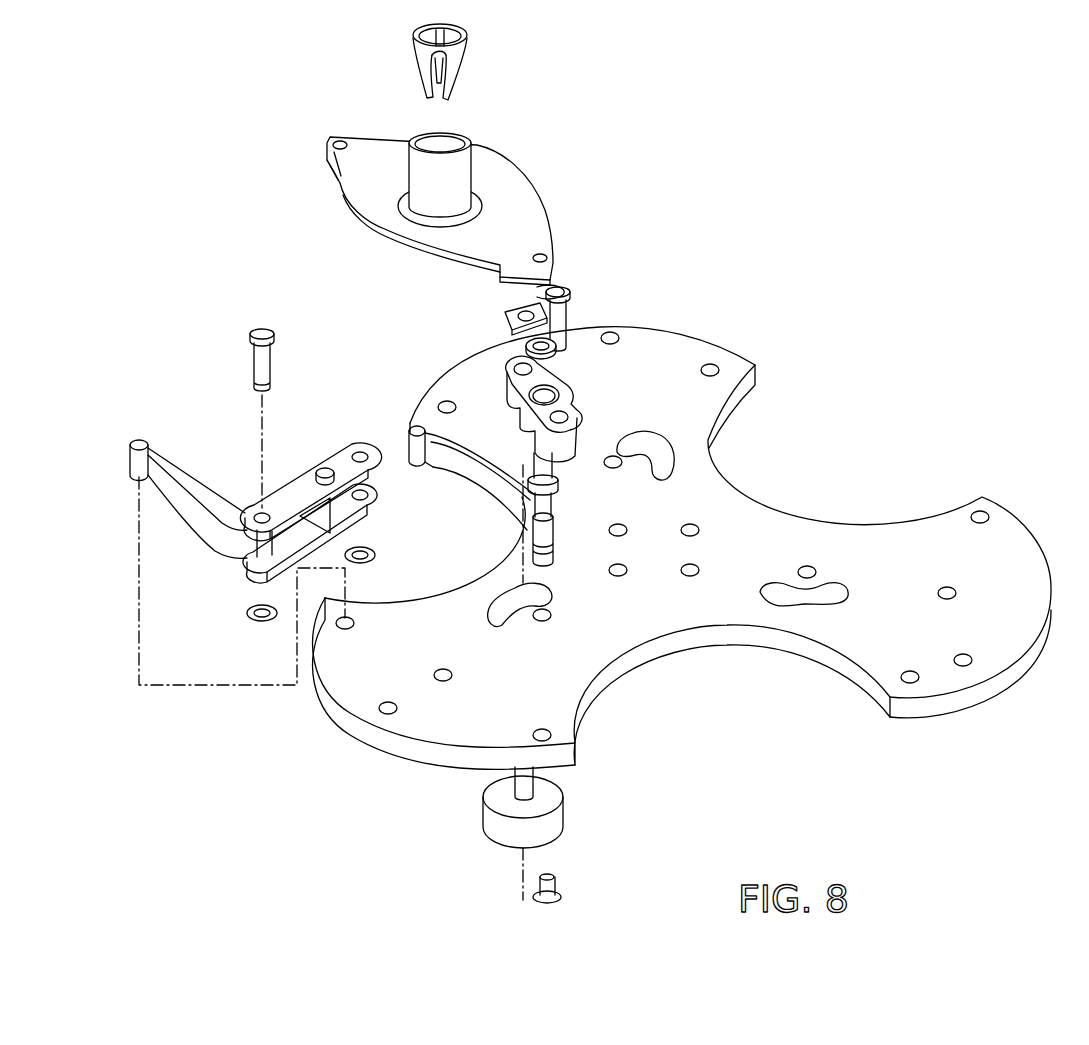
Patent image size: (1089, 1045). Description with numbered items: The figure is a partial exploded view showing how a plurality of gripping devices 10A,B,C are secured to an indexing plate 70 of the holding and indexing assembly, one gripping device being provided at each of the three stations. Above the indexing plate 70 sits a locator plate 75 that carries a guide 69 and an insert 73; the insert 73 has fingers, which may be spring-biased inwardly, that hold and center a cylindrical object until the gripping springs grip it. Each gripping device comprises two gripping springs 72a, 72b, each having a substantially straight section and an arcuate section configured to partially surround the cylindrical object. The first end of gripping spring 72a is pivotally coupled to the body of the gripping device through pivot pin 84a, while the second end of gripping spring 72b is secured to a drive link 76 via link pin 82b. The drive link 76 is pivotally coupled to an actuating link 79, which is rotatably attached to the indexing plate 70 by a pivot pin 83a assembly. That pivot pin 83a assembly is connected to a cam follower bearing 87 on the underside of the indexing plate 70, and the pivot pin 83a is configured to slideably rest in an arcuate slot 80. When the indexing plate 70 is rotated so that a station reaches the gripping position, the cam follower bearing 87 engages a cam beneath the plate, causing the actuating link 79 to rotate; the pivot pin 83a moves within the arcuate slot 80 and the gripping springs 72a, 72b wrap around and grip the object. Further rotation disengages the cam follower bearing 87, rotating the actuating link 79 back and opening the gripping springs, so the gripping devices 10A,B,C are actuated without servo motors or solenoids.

The indexing plate 70 is at (1020, 667).
The gripping spring 72a is at (488, 490).
The gripping spring 72b is at (173, 473).
The insert 73 is at (468, 40).
The locator plate 75 is at (520, 180).
The drive link 76 is at (337, 462).
The actuating link 79 is at (568, 388).
The arcuate slot 80 is at (497, 628).
The link pin 82b is at (275, 352).
The pivot pin 83a is at (513, 787).
The pivot pin 84a is at (553, 537).
The cam follower bearing 87 is at (560, 817).
The guide 69 is at (467, 140).
The gripping devices 10A,B,C is at (277, 272).